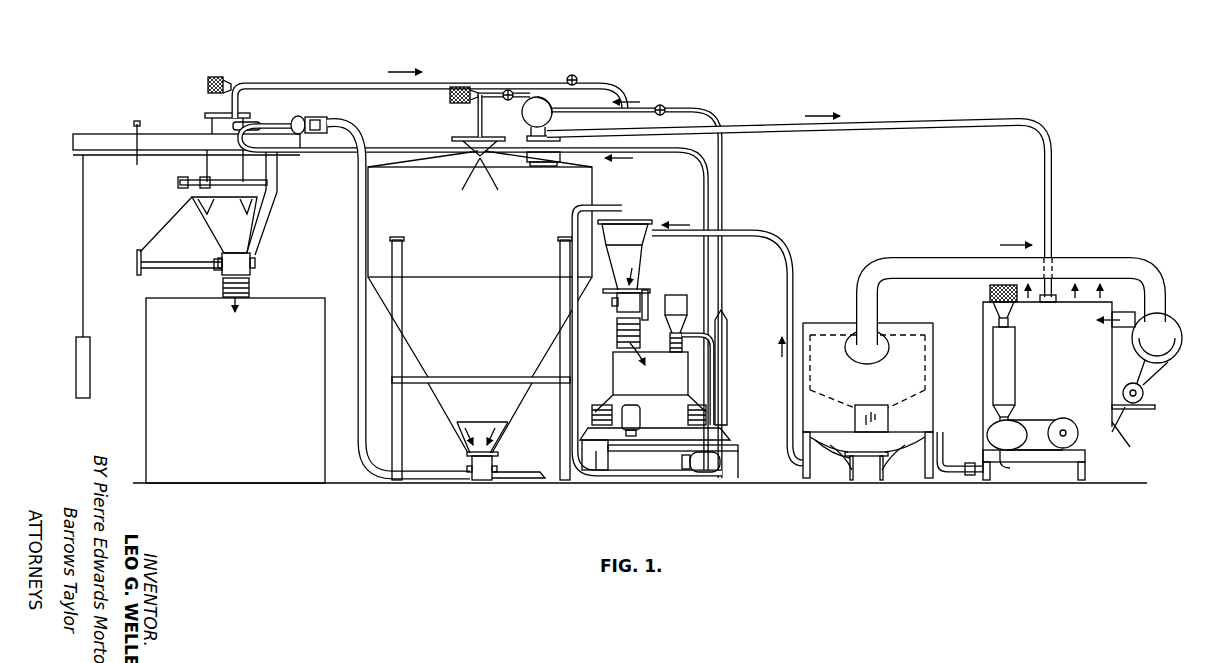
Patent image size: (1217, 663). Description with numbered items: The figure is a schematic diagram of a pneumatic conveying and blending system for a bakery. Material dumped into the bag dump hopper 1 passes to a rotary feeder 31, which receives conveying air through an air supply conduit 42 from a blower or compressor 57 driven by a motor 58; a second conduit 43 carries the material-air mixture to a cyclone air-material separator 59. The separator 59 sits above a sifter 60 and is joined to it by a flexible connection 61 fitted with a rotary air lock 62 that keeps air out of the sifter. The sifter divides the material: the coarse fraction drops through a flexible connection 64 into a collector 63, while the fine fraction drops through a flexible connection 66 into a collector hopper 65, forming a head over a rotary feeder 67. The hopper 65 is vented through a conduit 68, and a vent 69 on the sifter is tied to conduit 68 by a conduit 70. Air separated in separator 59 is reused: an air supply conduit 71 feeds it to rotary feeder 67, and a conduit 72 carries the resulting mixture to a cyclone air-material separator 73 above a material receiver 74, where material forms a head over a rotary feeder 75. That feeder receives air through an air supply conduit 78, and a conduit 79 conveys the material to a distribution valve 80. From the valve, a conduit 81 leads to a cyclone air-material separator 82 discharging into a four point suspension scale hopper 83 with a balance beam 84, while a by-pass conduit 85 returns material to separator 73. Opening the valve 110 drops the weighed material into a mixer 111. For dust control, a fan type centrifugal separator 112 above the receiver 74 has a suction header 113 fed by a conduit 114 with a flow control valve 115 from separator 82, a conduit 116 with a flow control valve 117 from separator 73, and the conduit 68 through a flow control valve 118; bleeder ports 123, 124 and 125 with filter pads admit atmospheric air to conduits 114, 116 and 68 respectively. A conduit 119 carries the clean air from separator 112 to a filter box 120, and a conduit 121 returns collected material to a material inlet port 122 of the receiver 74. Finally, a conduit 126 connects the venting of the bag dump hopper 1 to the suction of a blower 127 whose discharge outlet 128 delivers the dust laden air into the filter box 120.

The bag dump hopper 1 is at (930, 404).
The rotary feeder 31 is at (876, 475).
The air supply conduit 42 is at (948, 473).
The second conduit 43 is at (749, 237).
The blower or compressor 57 is at (1015, 446).
The motor 58 is at (1066, 449).
The air-material separator 59 is at (622, 228).
The sifter 60 is at (614, 370).
The flexible connection 61 is at (617, 327).
The rotary air lock 62 is at (615, 303).
The collector 63 is at (597, 471).
The flexible connection 64 is at (604, 402).
The collector hopper 65 is at (731, 433).
The flexible connection 66 is at (707, 413).
The rotary feeder 67 is at (721, 462).
The conduit 68 is at (723, 186).
The vent 69 is at (670, 340).
The conduit 70 is at (712, 345).
The air supply conduit 71 is at (572, 213).
The conduit 72 is at (596, 153).
The air-material separator 73 is at (458, 137).
The material receiver 74 is at (394, 170).
The rotary feeder 75 is at (481, 481).
The air supply conduit 78 is at (526, 479).
The conduit 79 is at (345, 126).
The distribution valve 80 is at (307, 117).
The conduit 81 is at (246, 122).
The air-material separator 82 is at (212, 121).
The scale hopper 83 is at (225, 225).
The balance beam 84 is at (76, 362).
The by-pass conduit 85 is at (295, 153).
The valve 110 is at (252, 268).
The mixer 111 is at (300, 484).
The fan type centrifugal separator 112 is at (536, 97).
The header 113 is at (608, 90).
The conduit 114 is at (282, 83).
The flow control valve 115 is at (573, 75).
The conduit 116 is at (483, 112).
The flow control valve 117 is at (508, 90).
The flow control valve 118 is at (663, 105).
The conduit 119 is at (740, 124).
The filter box 120 is at (1100, 427).
The conduit 121 is at (560, 138).
The material inlet port 122 is at (545, 166).
The bleeder port 123 is at (215, 77).
The bleeder port 124 is at (460, 87).
The bleeder port 125 is at (676, 295).
The conduit 126 is at (889, 259).
The blower 127 is at (1166, 350).
The discharge outlet 128 is at (1135, 305).